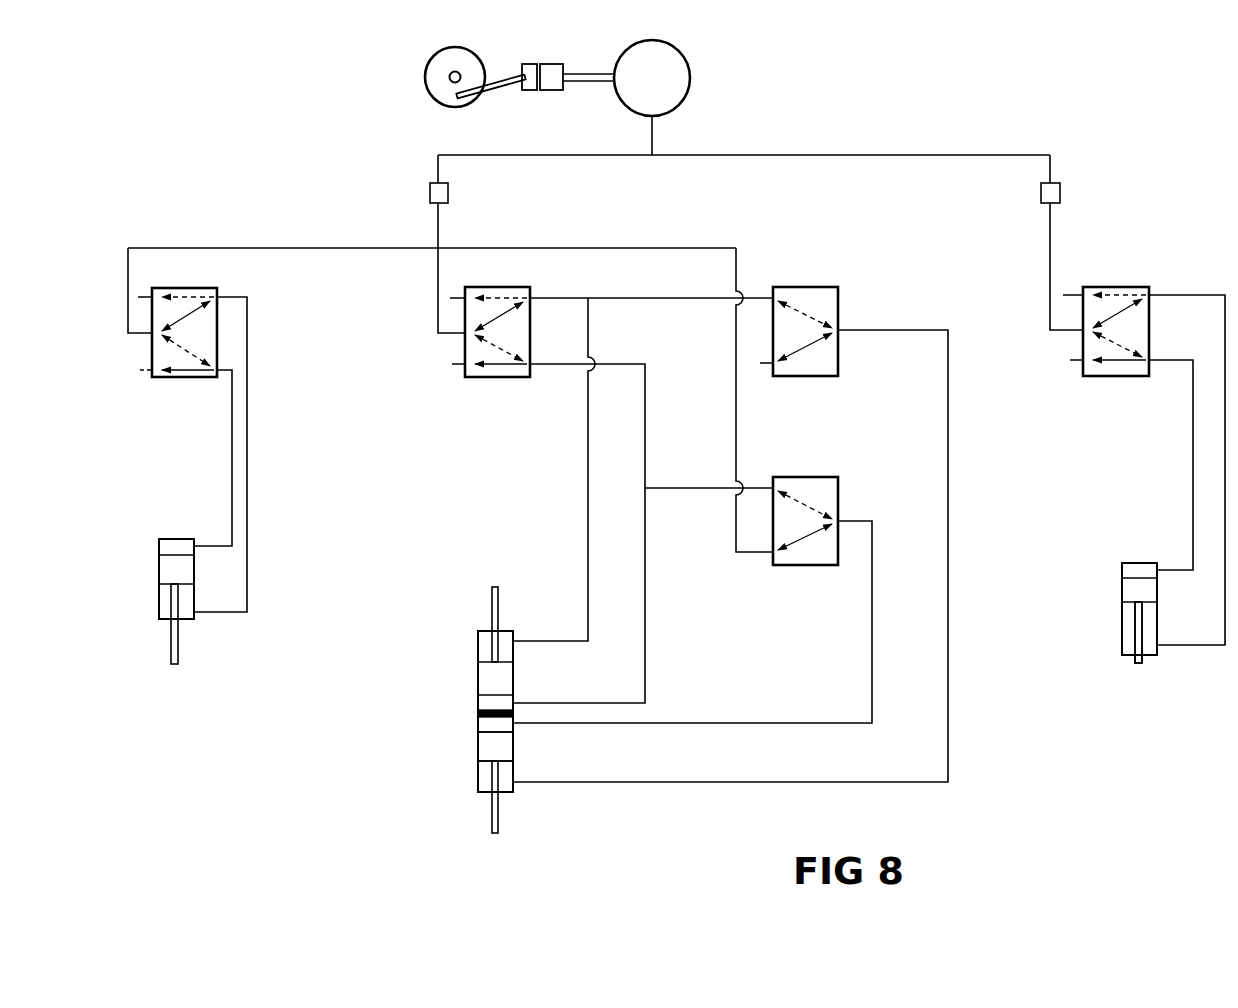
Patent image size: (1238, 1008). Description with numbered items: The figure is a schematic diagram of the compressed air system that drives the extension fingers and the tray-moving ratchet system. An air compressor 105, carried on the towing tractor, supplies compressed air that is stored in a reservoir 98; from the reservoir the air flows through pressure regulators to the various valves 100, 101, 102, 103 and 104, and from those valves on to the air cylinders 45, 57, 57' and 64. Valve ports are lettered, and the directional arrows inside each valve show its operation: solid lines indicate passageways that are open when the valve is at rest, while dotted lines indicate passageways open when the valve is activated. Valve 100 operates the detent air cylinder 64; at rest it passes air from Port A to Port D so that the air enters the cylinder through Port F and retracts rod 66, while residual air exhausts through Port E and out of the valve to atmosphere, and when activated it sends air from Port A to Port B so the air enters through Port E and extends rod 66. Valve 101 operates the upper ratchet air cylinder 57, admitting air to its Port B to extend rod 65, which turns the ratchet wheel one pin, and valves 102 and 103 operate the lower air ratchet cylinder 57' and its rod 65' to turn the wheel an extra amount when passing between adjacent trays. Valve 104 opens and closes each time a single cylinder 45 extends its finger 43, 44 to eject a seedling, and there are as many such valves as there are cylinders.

The reservoir 98 is at (673, 76).
The air compressor 105 is at (560, 70).
The valve 100 is at (188, 378).
The valve 101 is at (490, 378).
The valve 102 is at (797, 378).
The valve 103 is at (800, 487).
The valve 104 is at (1126, 288).
The detent air cylinder 64 is at (165, 564).
The rod 66 is at (172, 652).
The rod 65 is at (470, 621).
The upper ratchet air cylinder 57 is at (480, 714).
The lower air ratchet cylinder 57' is at (471, 746).
The rod 65' is at (469, 797).
The air cylinder 45 is at (1133, 568).
The finger 43 is at (1136, 665).
The piston rod 44 is at (1138, 632).